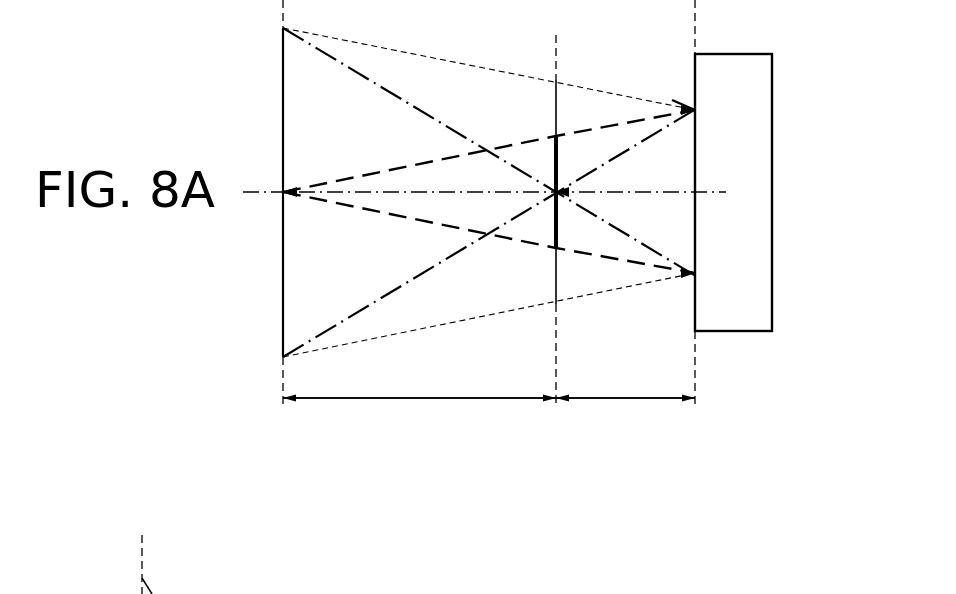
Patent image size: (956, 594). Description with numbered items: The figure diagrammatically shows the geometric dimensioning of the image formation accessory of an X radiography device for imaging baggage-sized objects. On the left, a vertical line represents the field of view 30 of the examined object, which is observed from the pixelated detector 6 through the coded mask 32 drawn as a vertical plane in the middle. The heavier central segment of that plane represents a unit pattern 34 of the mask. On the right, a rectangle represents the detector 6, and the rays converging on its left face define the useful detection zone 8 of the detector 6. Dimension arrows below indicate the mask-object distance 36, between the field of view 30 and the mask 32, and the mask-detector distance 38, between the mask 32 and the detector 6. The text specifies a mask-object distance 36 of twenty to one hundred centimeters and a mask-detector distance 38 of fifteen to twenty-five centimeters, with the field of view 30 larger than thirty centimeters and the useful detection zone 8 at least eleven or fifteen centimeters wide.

The pixelated detector 6 is at (762, 113).
The useful detection zone 8 is at (695, 146).
The field of view 30 is at (283, 68).
The coded mask 32 is at (556, 105).
The unit pattern 34 is at (553, 152).
The mask-object distance 36 is at (419, 383).
The mask-detector distance 38 is at (625, 383).